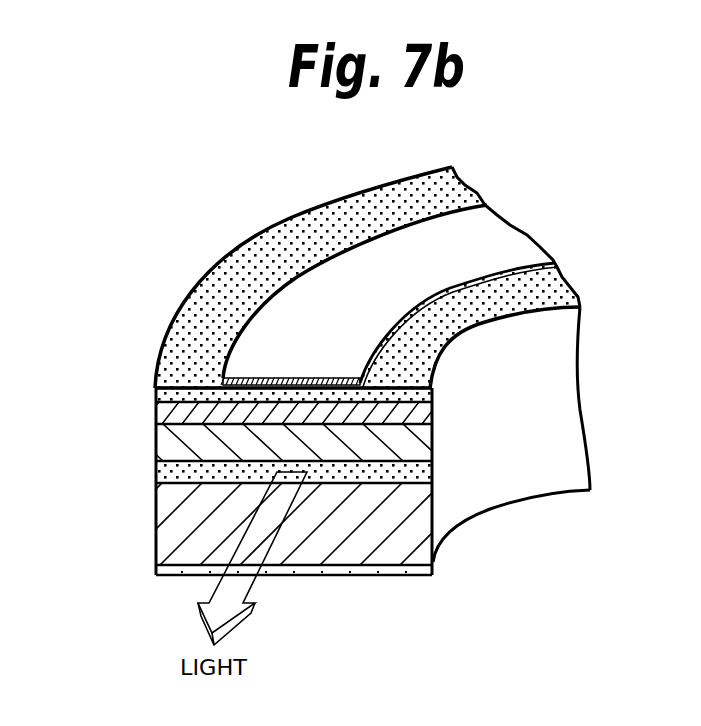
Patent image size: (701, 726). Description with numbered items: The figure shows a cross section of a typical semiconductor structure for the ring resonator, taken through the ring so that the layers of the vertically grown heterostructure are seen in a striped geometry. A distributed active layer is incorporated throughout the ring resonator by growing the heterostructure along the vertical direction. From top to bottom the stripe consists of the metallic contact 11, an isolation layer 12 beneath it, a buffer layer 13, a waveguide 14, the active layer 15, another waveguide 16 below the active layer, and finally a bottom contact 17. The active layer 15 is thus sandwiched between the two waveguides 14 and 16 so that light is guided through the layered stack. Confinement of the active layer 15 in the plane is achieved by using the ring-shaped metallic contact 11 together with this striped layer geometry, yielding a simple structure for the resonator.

The metallic contact 11 is at (267, 330).
The isolation layer 12 is at (155, 393).
The buffer layer 13 is at (155, 420).
The waveguide 14 is at (163, 450).
The active layer 15 is at (155, 477).
The another waveguide 16 is at (368, 553).
The bottom contact 17 is at (407, 569).